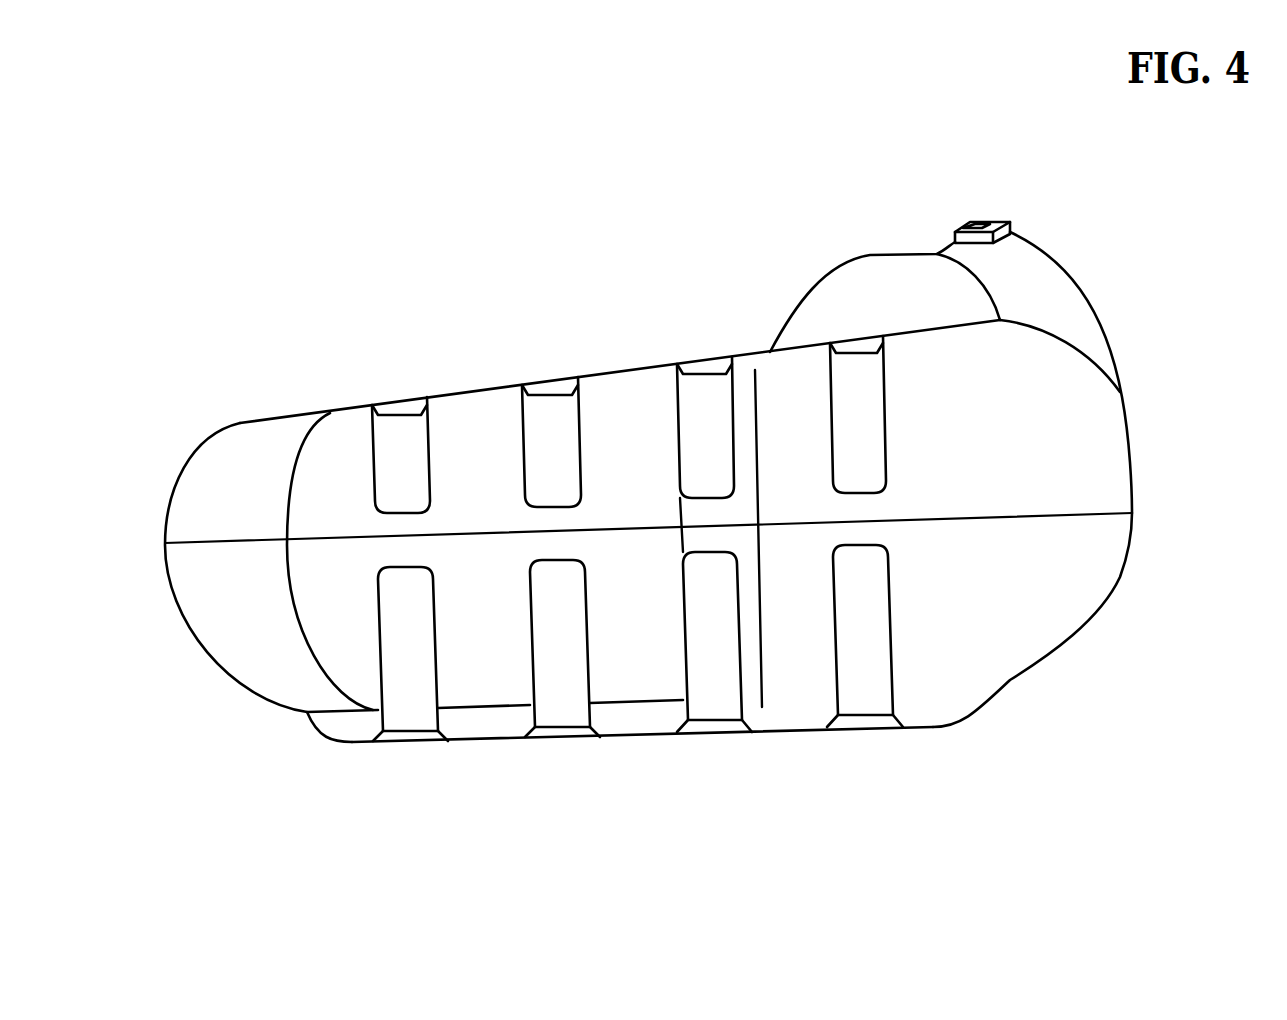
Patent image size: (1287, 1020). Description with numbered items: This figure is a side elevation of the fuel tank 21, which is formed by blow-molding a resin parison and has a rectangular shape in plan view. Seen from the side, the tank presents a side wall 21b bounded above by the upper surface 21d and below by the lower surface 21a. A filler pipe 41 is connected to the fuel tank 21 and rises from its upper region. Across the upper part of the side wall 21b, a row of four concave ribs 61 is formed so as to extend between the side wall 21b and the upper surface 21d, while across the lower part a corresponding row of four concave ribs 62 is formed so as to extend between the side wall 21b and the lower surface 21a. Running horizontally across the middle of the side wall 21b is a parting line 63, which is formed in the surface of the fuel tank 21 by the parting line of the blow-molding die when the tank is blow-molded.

The fuel tank 21 is at (310, 300).
The lower surface 21a is at (650, 737).
The side wall 21b is at (631, 450).
The upper surface 21d is at (478, 390).
The filler pipe 41 is at (1065, 278).
The concave ribs 61 is at (397, 427).
The concave ribs 62 is at (407, 695).
The parting line 63 is at (1048, 513).